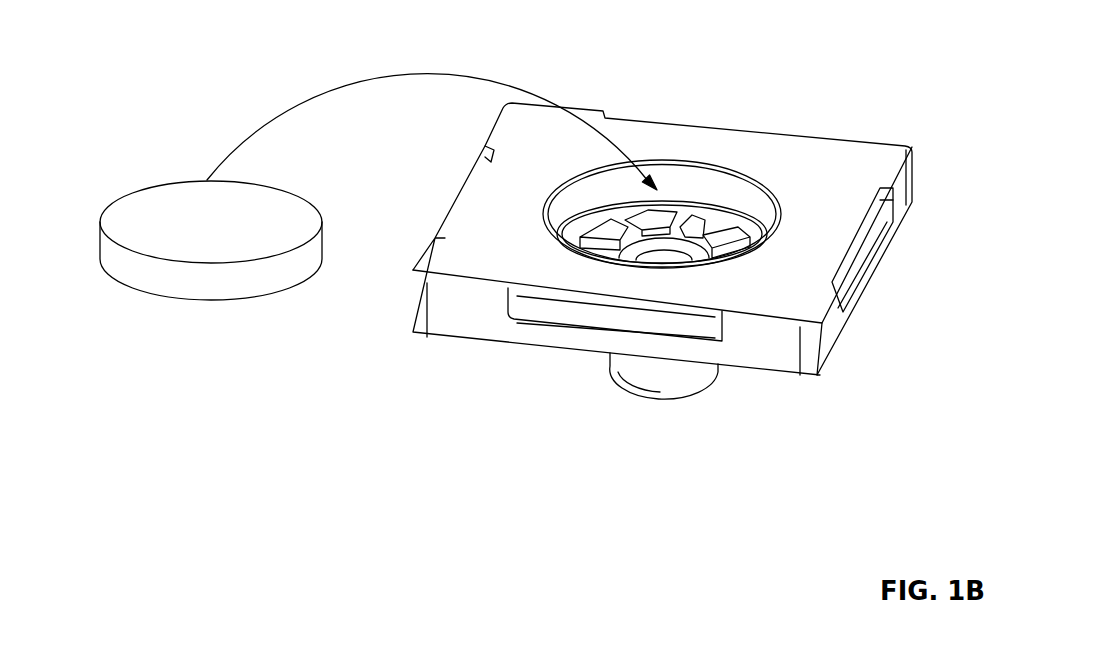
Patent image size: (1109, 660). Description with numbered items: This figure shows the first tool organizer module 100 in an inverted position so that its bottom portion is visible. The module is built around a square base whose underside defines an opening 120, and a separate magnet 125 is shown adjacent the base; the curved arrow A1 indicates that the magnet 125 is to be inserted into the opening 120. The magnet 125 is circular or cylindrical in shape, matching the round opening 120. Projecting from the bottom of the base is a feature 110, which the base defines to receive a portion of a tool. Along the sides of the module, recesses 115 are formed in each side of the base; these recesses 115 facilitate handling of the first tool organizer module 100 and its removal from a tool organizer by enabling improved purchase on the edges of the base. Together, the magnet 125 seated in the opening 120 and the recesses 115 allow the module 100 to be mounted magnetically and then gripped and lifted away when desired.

The arrow A1 is at (380, 76).
The first tool organizer module 100 is at (606, 247).
The features 110 is at (677, 382).
The recesses 115 is at (475, 192).
The opening 120 is at (707, 192).
The magnet 125 is at (170, 217).